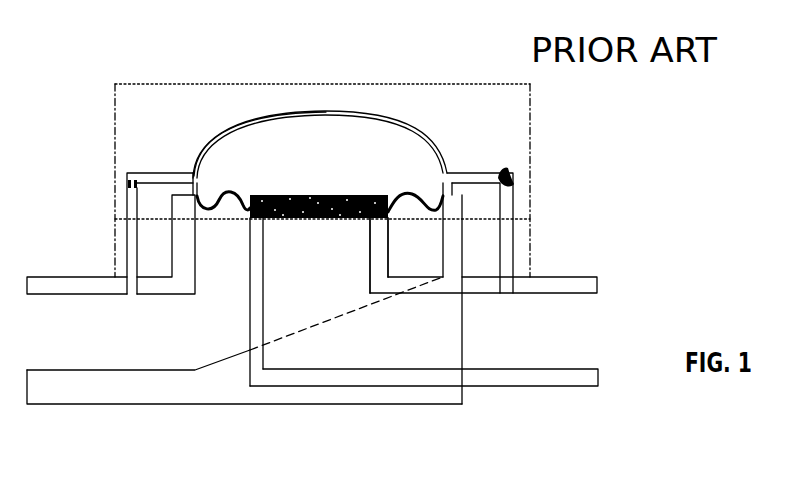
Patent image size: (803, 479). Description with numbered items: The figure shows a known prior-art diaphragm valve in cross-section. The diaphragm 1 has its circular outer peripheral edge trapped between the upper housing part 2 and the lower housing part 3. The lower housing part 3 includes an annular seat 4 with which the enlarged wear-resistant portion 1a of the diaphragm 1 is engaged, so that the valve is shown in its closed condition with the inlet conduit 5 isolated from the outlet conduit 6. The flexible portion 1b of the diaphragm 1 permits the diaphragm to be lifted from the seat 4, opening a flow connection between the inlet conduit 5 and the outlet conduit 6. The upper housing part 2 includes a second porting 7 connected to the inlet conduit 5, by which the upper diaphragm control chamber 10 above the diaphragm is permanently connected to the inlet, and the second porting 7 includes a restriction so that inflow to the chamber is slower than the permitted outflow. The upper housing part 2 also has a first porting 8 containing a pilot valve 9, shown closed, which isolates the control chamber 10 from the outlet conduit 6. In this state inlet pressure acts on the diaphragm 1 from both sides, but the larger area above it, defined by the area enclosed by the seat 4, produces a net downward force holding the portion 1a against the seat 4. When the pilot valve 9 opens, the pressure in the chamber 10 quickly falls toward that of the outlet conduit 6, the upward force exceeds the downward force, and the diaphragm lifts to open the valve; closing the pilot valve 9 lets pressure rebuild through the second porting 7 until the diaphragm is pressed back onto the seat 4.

The diaphragm 1 is at (375, 156).
The enlarged wear-resistant portion 1a is at (293, 195).
The flexible portion 1b is at (226, 196).
The upper housing part 2 is at (528, 113).
The lower housing part 3 is at (523, 250).
The annular seat 4 is at (312, 299).
The inlet conduit 5 is at (233, 268).
The outlet conduit 6 is at (526, 342).
The second porting 7 is at (128, 201).
The first porting 8 is at (507, 213).
The pilot valve 9 is at (513, 185).
The upper diaphragm control chamber 10 is at (298, 127).